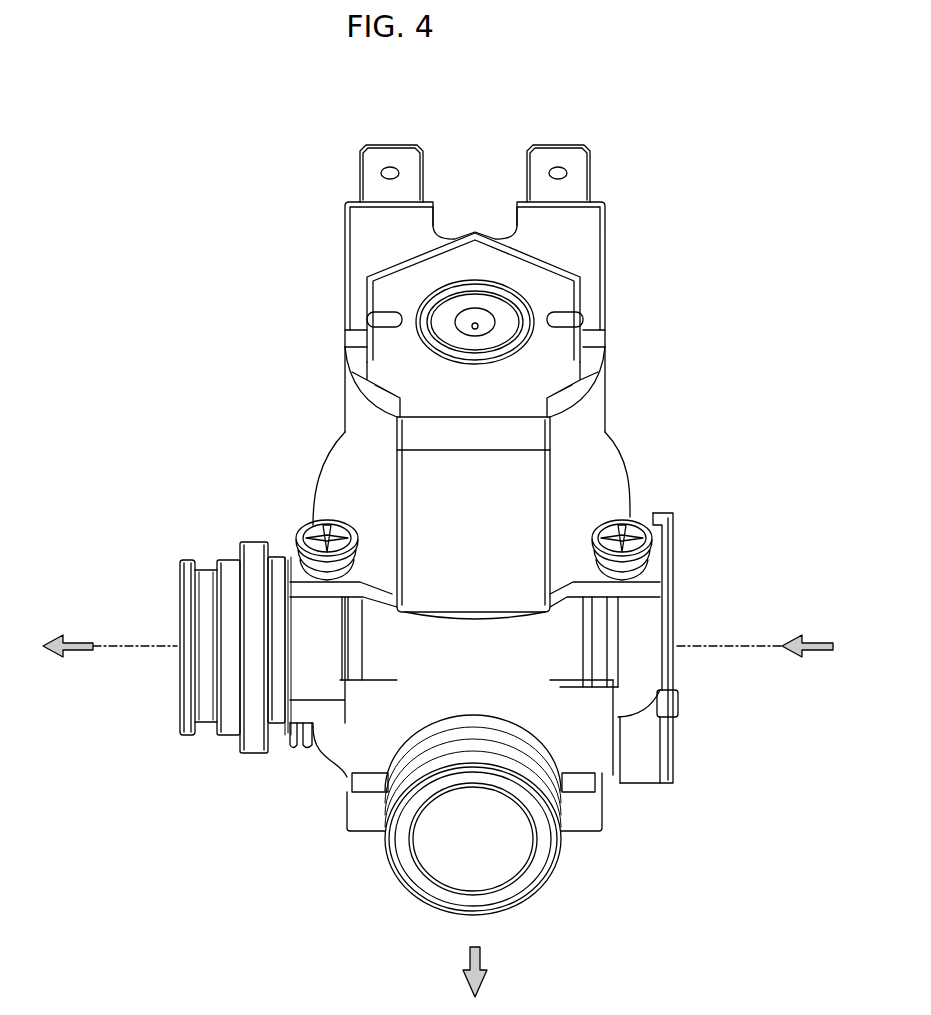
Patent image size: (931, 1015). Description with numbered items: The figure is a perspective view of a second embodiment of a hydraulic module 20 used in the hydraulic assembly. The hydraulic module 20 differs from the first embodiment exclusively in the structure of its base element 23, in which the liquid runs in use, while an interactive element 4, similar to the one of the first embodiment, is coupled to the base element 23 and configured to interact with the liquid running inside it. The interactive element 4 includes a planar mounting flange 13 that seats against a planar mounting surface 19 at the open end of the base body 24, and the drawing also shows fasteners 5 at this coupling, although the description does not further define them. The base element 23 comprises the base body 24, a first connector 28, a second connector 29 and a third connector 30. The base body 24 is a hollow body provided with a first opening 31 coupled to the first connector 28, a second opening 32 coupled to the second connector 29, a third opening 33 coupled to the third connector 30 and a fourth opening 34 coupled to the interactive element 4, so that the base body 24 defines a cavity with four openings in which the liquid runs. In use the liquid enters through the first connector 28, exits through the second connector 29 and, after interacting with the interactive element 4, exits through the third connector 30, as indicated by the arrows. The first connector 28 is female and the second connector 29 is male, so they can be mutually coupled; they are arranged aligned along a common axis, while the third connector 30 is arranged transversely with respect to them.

The hydraulic module 20 is at (485, 370).
The interactive element 4 is at (583, 243).
The planar mounting flange 13 is at (333, 484).
The fourth opening 34 is at (633, 447).
The fastening screws 5 is at (312, 520).
The first opening 31 is at (693, 565).
The second opening 32 is at (187, 644).
The third connector 30 is at (177, 655).
The second connector 29 is at (188, 717).
The base body 24 is at (410, 680).
The base element 23 is at (528, 690).
The first connector 28 is at (667, 660).
The planar mounting surface 19 is at (316, 593).
The third opening 33 is at (377, 848).